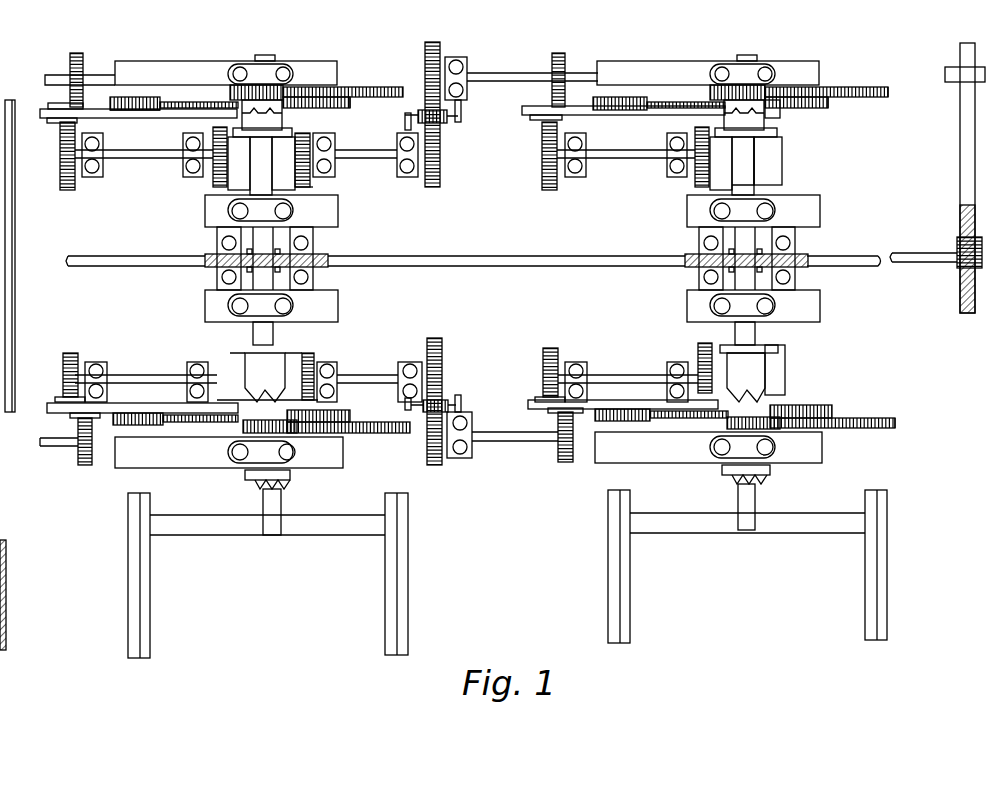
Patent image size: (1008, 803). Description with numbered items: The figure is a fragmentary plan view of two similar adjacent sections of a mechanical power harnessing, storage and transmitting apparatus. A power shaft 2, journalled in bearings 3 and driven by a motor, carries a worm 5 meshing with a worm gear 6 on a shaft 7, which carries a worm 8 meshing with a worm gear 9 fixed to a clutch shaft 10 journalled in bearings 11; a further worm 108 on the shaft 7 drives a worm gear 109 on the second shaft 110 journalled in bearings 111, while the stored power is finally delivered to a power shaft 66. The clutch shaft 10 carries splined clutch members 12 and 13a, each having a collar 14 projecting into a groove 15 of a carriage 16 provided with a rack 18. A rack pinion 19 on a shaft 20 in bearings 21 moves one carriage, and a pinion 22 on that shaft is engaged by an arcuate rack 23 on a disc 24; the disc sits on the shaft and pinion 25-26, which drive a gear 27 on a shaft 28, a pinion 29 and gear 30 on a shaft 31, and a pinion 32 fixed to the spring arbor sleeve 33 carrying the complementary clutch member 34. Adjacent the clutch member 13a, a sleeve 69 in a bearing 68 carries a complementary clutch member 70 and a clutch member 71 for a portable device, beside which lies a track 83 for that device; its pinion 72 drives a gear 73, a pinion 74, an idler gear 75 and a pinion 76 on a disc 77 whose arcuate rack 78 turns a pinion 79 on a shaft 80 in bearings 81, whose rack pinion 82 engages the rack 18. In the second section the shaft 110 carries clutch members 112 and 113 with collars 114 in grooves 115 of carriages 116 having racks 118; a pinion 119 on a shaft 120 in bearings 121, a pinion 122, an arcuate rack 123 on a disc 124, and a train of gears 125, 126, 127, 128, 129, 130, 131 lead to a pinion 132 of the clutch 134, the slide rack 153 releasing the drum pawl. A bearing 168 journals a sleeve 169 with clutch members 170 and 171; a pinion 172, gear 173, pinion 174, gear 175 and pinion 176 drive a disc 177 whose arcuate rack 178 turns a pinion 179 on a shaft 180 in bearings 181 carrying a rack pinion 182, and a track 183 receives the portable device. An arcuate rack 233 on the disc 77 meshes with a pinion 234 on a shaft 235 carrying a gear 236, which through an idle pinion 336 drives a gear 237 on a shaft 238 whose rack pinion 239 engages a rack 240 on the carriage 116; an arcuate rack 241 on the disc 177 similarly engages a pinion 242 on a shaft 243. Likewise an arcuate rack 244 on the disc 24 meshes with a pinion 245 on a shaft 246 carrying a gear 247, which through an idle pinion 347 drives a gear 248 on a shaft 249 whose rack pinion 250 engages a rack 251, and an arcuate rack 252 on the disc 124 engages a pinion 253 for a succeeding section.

The power shaft 2 is at (960, 147).
The bearings 3 is at (952, 82).
The worm 5 is at (957, 240).
The worm gear 6 is at (960, 295).
The shaft 7 is at (918, 262).
The worm 8 is at (795, 278).
The worm gear 9 is at (688, 267).
The clutch shaft 10 is at (755, 167).
The bearings 11 is at (820, 213).
The clutch member 12 is at (780, 122).
The clutch member 13a is at (768, 368).
The collar 14 is at (777, 134).
The groove 15 is at (732, 150).
The carriage 16 is at (782, 181).
The rack 18 is at (710, 140).
The rack pinion 19 is at (695, 175).
The shaft 20 is at (622, 160).
The bearings 21 is at (665, 138).
The pinion 22 is at (542, 160).
The arcuate rack 23 is at (535, 120).
The disc 24 is at (522, 111).
The shaft and pinion 25-26 is at (640, 97).
The gear 27 is at (715, 85).
The shaft 28 is at (735, 61).
The pinion 29 is at (830, 108).
The gear 30 is at (880, 87).
The shaft 31 is at (774, 109).
The pinion 32 is at (768, 97).
The spring arbor sleeve 33 is at (750, 55).
The complementary clutch member 34 is at (772, 87).
The power shaft 66 is at (15, 207).
The bearing 68 is at (770, 455).
The sleeve 69 is at (722, 470).
The complementary clutch member 70 is at (790, 405).
The clutch member 71 is at (762, 486).
The pinion 72 is at (727, 428).
The gear 73 is at (890, 418).
The pinion 74 is at (845, 418).
The idler gear 75 is at (675, 418).
The pinion 76 is at (620, 421).
The disc 77 is at (608, 400).
The arcuate rack 78 is at (537, 397).
The pinion 79 is at (545, 350).
The shaft 80 is at (644, 375).
The bearings 81 is at (580, 365).
The rack pinion 82 is at (678, 362).
The frame 83 is at (865, 588).
The worm 108 is at (308, 245).
The worm gear 109 is at (328, 266).
The shaft 110 is at (320, 322).
The bearings 111 is at (205, 222).
The clutch member 112 is at (282, 118).
The clutch member 113 is at (245, 360).
The collar 114 is at (292, 132).
The groove 115 is at (272, 150).
The carriage 116 is at (228, 190).
The rack 118 is at (213, 182).
The pinion 119 is at (228, 140).
The shaft 120 is at (125, 158).
The bearings 121 is at (105, 144).
The pinion 122 is at (60, 165).
The arcuate rack 123 is at (52, 123).
The disc 124 is at (42, 114).
The gear train member 125 is at (128, 97).
The gear train member 126 is at (145, 98).
The gear train member 127 is at (183, 102).
The gear train member 128 is at (232, 62).
The gear train member 129 is at (350, 108).
The gear train member 130 is at (403, 88).
The gear train member 131 is at (337, 78).
The pinion 132 is at (270, 85).
The clutch 134 is at (290, 87).
The rack 153 is at (263, 55).
The bearing 168 is at (247, 476).
The sleeve 169 is at (343, 466).
The clutch member 170 is at (320, 404).
The clutch member 171 is at (285, 486).
The pinion 172 is at (245, 432).
The gear 173 is at (380, 433).
The pinion 174 is at (350, 416).
The gear 175 is at (198, 422).
The pinion 176 is at (140, 425).
The disc 177 is at (135, 410).
The arcuate rack 178 is at (58, 397).
The pinion 179 is at (68, 353).
The shaft 180 is at (125, 375).
The bearings 181 is at (97, 362).
The rack pinion 182 is at (187, 368).
The track 183 is at (385, 595).
The arcuate rack 233 is at (556, 413).
The pinion 234 is at (560, 462).
The shaft 235 is at (500, 432).
The gear 236 is at (445, 462).
The gear 237 is at (442, 352).
The shaft 238 is at (380, 372).
The rack pinion 239 is at (398, 366).
The rack 240 is at (345, 362).
The arcuate rack 241 is at (72, 418).
The pinion 242 is at (80, 465).
The shaft 243 is at (58, 446).
The arcuate rack 244 is at (540, 73).
The pinion 245 is at (562, 53).
The shaft 246 is at (466, 57).
The gear 247 is at (428, 42).
The gear 248 is at (418, 143).
The shaft 249 is at (382, 160).
The rack pinion 250 is at (335, 150).
The rack 251 is at (313, 183).
The arcuate rack 252 is at (56, 103).
The pinion 253 is at (80, 53).
The idle pinion 336 is at (450, 402).
The idle pinion 347 is at (461, 110).